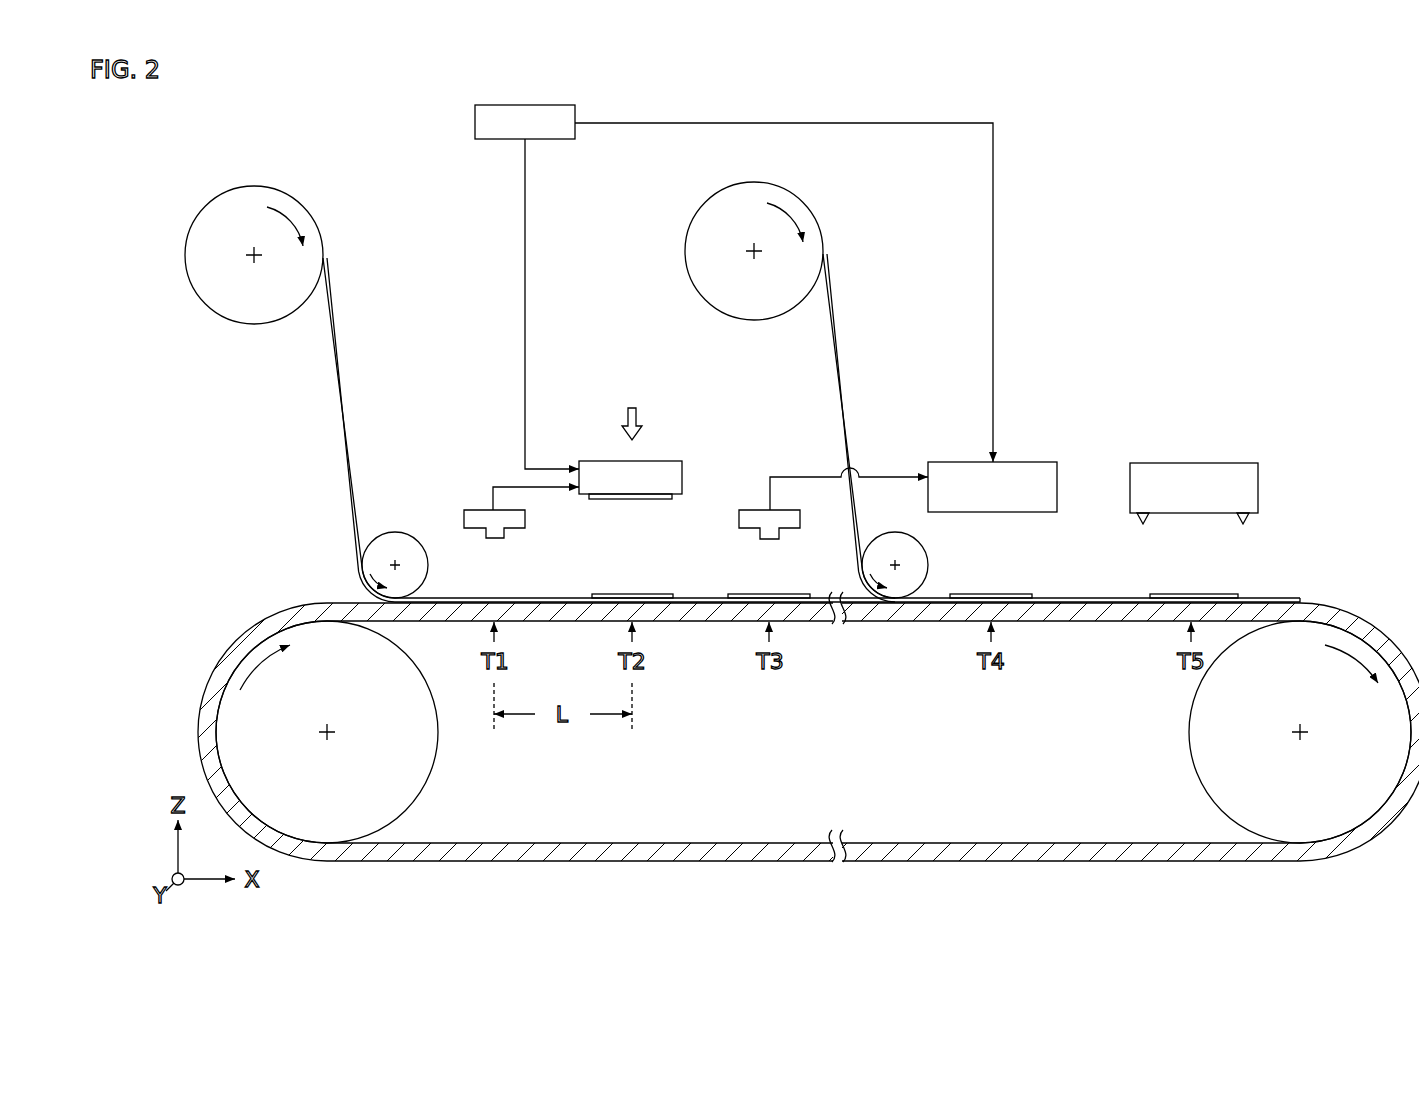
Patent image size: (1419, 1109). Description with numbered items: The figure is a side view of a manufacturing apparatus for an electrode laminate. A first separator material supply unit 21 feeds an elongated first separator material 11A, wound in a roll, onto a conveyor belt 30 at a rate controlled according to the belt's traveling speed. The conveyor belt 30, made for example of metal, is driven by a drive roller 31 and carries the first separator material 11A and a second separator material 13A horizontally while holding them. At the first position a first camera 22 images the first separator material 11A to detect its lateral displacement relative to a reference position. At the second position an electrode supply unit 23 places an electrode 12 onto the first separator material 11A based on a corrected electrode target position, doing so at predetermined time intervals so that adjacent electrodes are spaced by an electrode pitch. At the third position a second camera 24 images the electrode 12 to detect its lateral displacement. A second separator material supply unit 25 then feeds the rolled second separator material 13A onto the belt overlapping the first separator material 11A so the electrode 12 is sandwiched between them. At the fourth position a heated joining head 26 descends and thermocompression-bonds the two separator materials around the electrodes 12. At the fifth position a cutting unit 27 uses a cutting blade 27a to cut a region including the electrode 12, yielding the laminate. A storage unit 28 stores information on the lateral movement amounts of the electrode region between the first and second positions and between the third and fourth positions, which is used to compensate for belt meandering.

The first separator material 11A is at (339, 354).
The electrode 12 is at (608, 500).
The second separator material 13A is at (840, 345).
The first separator material supply unit 21 is at (313, 211).
The first camera 22 is at (470, 510).
The electrode supply unit 23 is at (590, 461).
The second camera 24 is at (738, 520).
The second separator material supply unit 25 is at (800, 200).
The joining head 26 is at (1035, 462).
The cutting unit 27 is at (1230, 463).
The cutting blade 27a is at (1140, 520).
The storage unit 28 is at (475, 120).
The conveyor belt 30 is at (888, 862).
The drive roller 31 is at (420, 796).